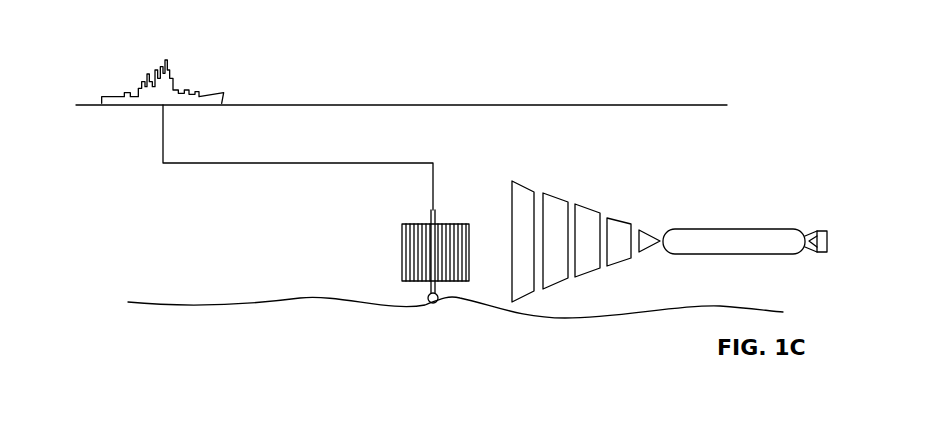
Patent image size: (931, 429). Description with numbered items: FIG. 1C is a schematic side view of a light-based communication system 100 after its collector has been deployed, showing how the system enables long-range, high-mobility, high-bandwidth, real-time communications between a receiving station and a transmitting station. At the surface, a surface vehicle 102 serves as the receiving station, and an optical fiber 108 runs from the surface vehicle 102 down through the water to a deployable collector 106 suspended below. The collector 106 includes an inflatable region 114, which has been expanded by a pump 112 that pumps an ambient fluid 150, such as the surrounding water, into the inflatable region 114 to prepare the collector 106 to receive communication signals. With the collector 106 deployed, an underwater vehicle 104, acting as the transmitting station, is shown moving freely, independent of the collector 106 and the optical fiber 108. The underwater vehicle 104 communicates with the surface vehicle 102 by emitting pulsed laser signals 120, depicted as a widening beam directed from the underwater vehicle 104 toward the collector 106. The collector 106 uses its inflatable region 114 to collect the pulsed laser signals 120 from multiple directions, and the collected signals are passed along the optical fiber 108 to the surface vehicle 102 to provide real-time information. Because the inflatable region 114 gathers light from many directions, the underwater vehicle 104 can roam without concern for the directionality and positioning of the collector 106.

The communication system 100 is at (672, 69).
The surface vehicle 102 is at (116, 96).
The underwater vehicle 104 is at (766, 229).
The collector 106 is at (433, 212).
The optical fiber 108 is at (242, 163).
The pump 112 is at (432, 305).
The inflatable region 114 is at (402, 238).
The pulsed laser signals 120 is at (549, 194).
The ambient fluid 150 is at (183, 272).